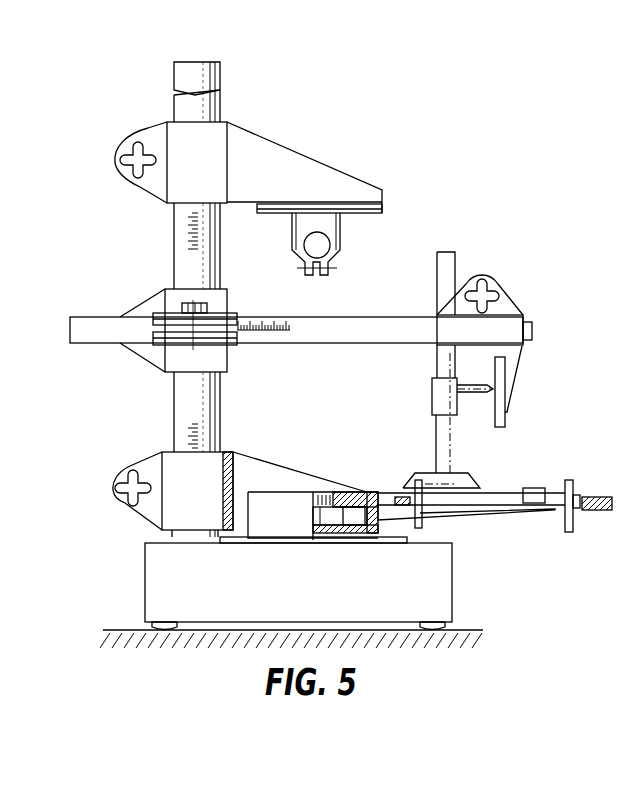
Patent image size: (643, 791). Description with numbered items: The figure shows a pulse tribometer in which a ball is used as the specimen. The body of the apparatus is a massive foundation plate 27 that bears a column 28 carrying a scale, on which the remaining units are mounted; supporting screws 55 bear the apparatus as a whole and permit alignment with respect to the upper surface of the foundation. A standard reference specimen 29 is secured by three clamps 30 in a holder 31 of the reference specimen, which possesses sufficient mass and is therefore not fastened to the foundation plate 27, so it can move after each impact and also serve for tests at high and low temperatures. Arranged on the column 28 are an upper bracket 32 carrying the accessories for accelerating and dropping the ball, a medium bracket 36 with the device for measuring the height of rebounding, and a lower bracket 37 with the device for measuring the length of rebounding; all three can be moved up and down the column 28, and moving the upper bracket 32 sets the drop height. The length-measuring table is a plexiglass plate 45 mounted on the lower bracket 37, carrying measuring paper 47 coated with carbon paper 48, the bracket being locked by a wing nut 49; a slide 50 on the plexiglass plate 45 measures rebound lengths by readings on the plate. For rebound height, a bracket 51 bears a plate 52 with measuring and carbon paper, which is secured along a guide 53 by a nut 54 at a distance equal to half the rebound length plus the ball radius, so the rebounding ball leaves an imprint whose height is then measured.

The foundation plate 27 is at (438, 568).
The column 28 is at (178, 537).
The reference specimen 29 is at (313, 530).
The clamps 30 is at (357, 497).
The holder of the reference specimen 31 is at (360, 527).
The upper bracket 32 is at (263, 157).
The medium bracket 36 is at (212, 320).
The lower bracket 37 is at (333, 490).
The plexiglass plate 45 is at (441, 498).
The measuring paper 47 is at (604, 497).
The carbon paper 48 is at (593, 495).
The wing nut 49 is at (133, 497).
The slide 50 is at (530, 487).
The bracket 51 is at (503, 323).
The plate 52 is at (505, 368).
The guide 53 is at (290, 323).
The nut 54 is at (183, 305).
The supporting screws 55 is at (446, 627).